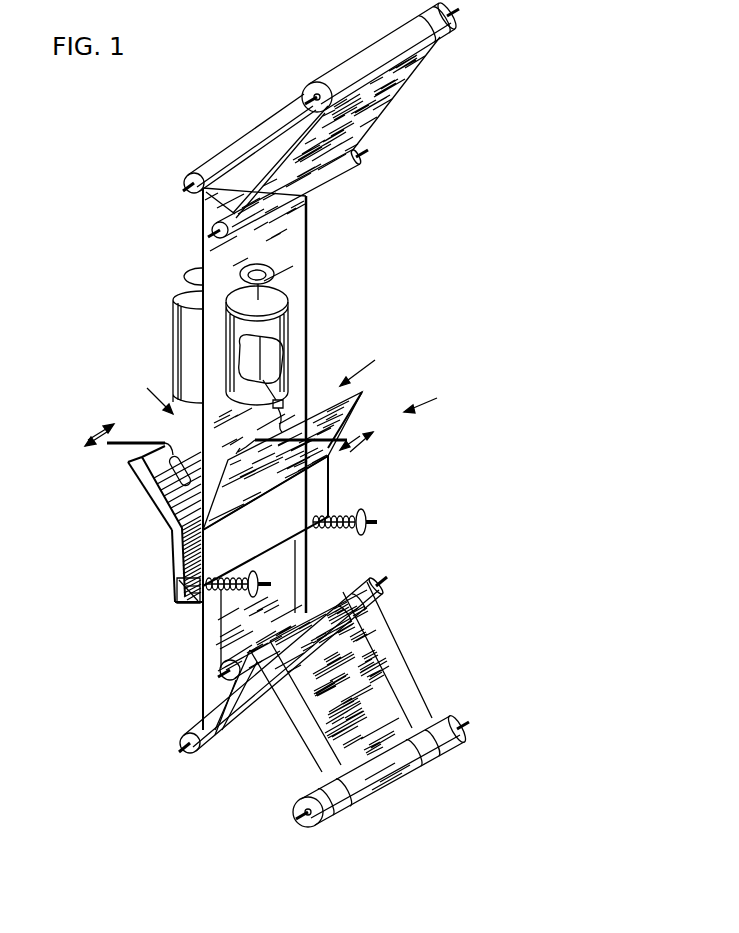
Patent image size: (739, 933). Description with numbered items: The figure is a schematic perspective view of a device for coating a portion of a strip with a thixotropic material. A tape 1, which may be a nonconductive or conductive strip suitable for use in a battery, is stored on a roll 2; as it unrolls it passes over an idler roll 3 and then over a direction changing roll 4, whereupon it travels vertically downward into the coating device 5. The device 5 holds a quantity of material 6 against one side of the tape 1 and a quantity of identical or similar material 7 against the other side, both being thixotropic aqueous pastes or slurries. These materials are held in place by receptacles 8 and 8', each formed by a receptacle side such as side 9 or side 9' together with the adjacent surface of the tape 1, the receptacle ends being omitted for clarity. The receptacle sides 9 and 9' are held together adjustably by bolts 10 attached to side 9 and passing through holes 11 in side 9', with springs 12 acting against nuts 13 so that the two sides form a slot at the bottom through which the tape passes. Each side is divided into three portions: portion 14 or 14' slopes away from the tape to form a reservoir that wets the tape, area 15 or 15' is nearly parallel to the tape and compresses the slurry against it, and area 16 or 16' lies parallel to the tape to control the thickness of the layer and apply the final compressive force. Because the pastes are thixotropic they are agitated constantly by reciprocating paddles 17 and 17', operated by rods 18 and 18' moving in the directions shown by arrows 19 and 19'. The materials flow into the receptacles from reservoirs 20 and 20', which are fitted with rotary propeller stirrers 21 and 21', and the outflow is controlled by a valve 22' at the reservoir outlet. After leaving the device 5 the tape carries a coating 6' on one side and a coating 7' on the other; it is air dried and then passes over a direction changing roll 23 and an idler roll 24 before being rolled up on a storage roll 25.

The tape 1 is at (388, 112).
The storage roll 2 is at (460, 13).
The idler roll 3 is at (361, 160).
The direction changing roll 4 is at (190, 176).
The device 5 is at (429, 400).
The material 6 is at (157, 511).
The coating 6' is at (238, 698).
The material 7 is at (269, 459).
The coating 7' is at (323, 680).
The receptacle 8 is at (150, 391).
The receptacle 8' is at (367, 365).
The receptacle side 9 is at (154, 566).
The receptacle side 9' is at (303, 489).
The bolt 10 is at (208, 592).
The hole 11 is at (208, 597).
The spring 12 is at (331, 526).
The nut 13 is at (386, 515).
The portion 14 is at (129, 496).
The portion 14' is at (282, 461).
The area 15 is at (165, 593).
The area 15' is at (220, 558).
The area 16 is at (164, 612).
The area 16' is at (167, 628).
The reciprocating paddle 17 is at (154, 489).
The reciprocating paddle 17' is at (261, 460).
The rod 18 is at (117, 461).
The rod 18' is at (330, 417).
The arrows 19 is at (88, 427).
The arrows 19' is at (372, 447).
The reservoir 20 is at (163, 347).
The reservoir 20' is at (296, 345).
The stirrer 21 is at (173, 269).
The stirrer 21' is at (244, 347).
The valve 22' is at (316, 380).
The direction changing roll 23 is at (179, 737).
The idler roll 24 is at (384, 590).
The storage roll 25 is at (455, 716).